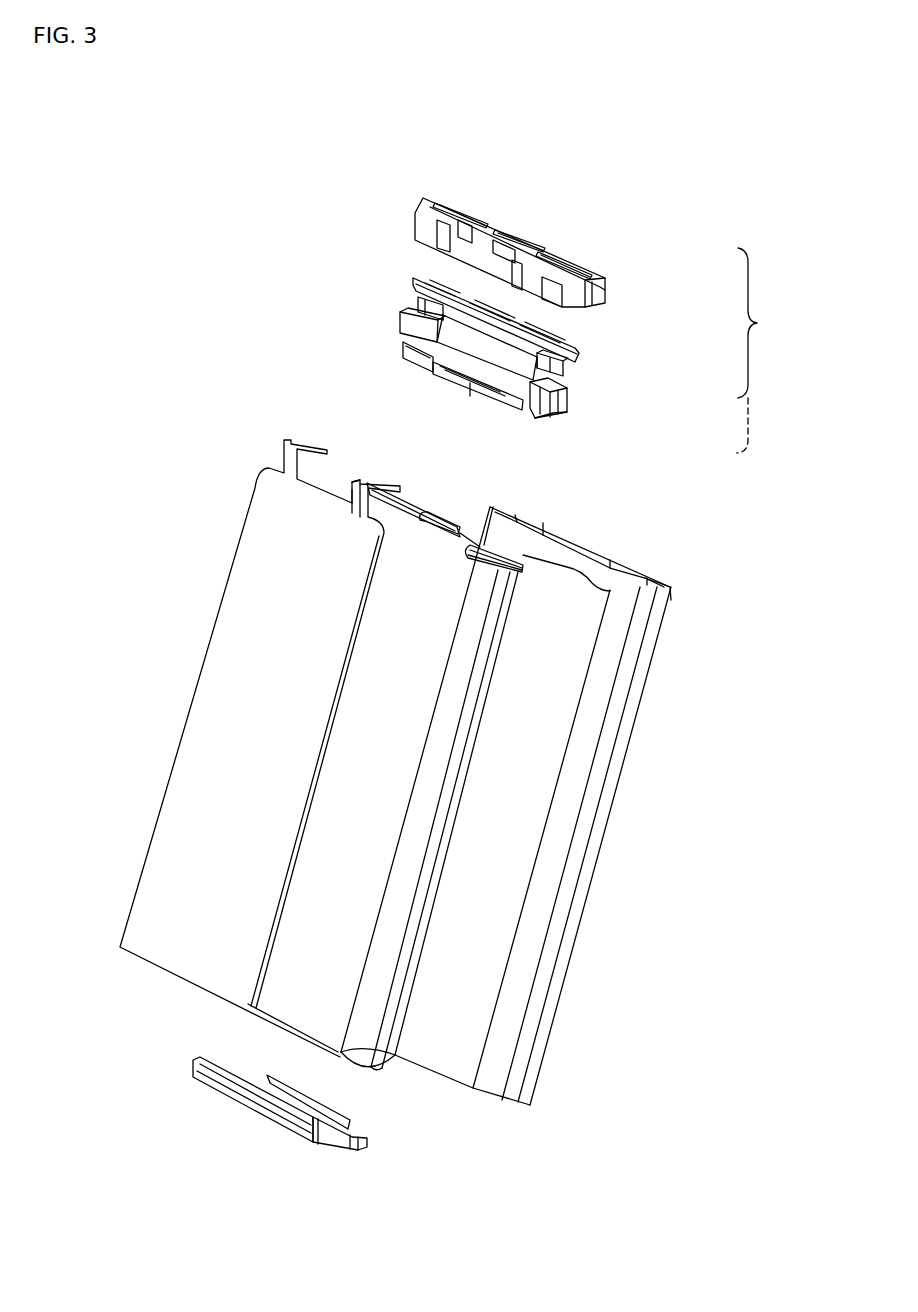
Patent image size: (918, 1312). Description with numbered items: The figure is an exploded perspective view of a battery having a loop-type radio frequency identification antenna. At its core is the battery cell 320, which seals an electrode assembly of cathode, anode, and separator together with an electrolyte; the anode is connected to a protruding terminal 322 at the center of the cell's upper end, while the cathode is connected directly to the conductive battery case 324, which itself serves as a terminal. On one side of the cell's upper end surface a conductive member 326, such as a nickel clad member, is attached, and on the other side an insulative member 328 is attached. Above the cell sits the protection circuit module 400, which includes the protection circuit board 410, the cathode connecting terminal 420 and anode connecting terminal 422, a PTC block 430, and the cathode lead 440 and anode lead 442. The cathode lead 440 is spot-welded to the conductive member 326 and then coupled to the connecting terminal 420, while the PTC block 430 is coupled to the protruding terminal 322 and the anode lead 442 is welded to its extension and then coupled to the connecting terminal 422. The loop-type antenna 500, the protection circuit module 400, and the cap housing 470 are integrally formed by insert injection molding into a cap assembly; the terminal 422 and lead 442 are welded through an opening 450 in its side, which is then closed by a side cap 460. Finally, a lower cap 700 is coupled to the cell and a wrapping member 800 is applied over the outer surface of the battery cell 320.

The battery cell 320 is at (545, 714).
The protruding terminal 322 is at (420, 520).
The conductive battery case 324 is at (460, 822).
The conductive member 326 is at (360, 517).
The insulative member 328 is at (610, 591).
The protection circuit module 400 is at (774, 350).
The protection circuit board 410 is at (580, 353).
The cathode connecting terminal 420 is at (420, 297).
The anode connecting terminal 422 is at (565, 373).
The PTC block 430 is at (443, 380).
The cathode lead 440 is at (405, 347).
The anode lead 442 is at (553, 413).
The opening 450 is at (570, 318).
The side cap 460 is at (567, 413).
The cap housing 470 is at (552, 246).
The loop-type RFID antenna 500 is at (197, 768).
The lower cap 700 is at (193, 1064).
The wrapping member 800 is at (560, 993).